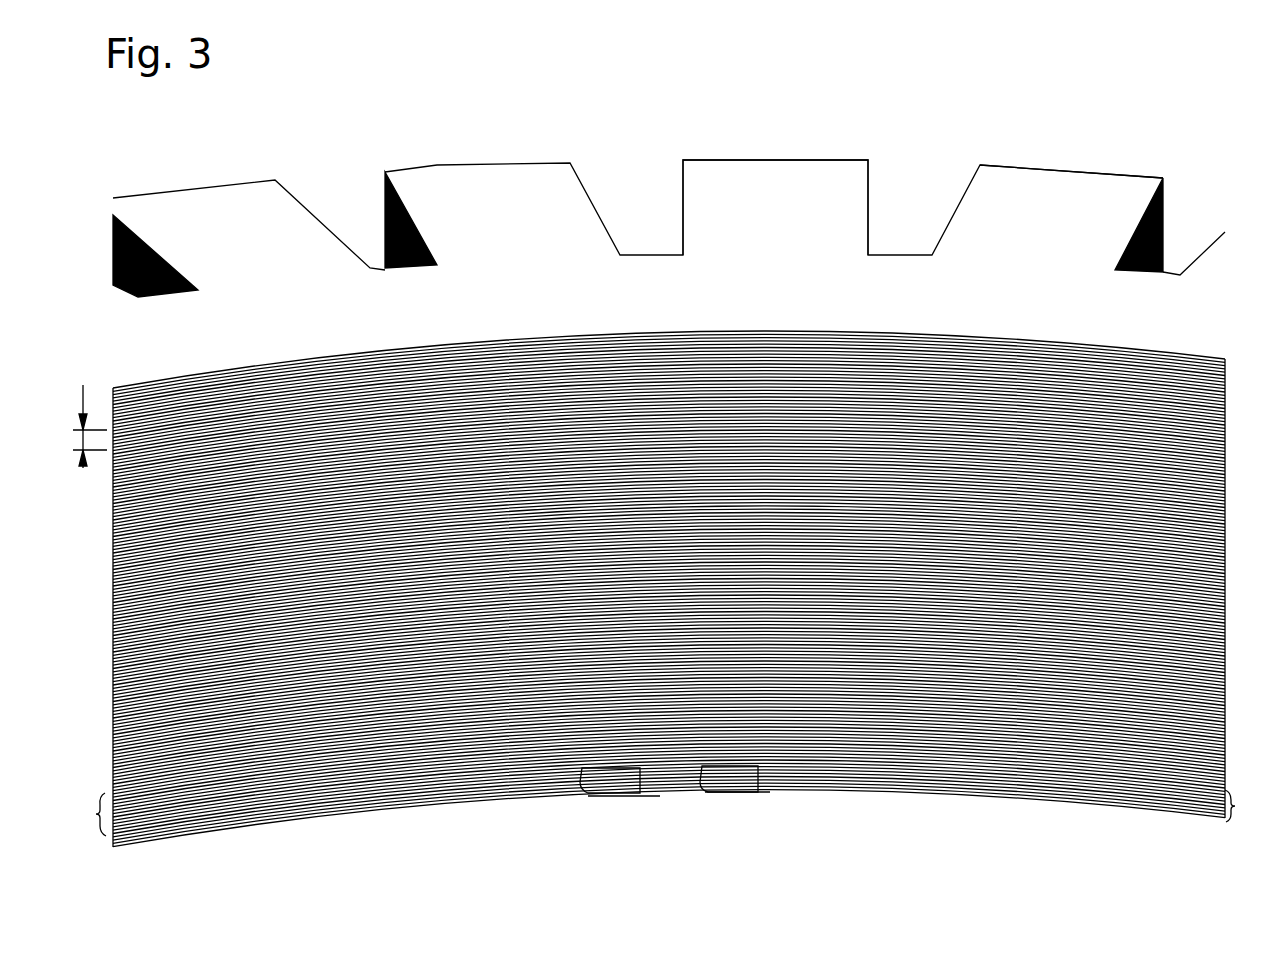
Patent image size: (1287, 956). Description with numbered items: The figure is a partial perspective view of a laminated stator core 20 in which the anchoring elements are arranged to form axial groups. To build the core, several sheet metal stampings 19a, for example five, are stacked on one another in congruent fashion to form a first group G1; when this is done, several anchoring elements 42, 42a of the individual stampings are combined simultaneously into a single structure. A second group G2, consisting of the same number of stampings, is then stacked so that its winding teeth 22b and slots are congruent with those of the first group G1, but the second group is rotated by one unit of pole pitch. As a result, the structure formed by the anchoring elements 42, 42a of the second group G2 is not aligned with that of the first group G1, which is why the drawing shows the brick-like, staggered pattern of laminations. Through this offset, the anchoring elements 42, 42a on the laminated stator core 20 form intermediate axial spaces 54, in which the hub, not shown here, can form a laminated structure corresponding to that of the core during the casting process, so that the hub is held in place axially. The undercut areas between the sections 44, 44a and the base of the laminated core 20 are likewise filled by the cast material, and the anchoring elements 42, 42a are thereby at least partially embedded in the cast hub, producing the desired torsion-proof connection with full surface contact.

The sheet metal stamping 19a is at (790, 231).
The winding tooth 22b is at (1068, 168).
The laminated stator core 20 is at (667, 800).
The intermediate axial space 54 is at (83, 414).
The anchoring element 42 is at (625, 802).
The anchoring element 42a is at (745, 804).
The section 44 is at (723, 796).
The section 44a is at (607, 796).
The first group G1 is at (1251, 806).
The second group G2 is at (88, 814).